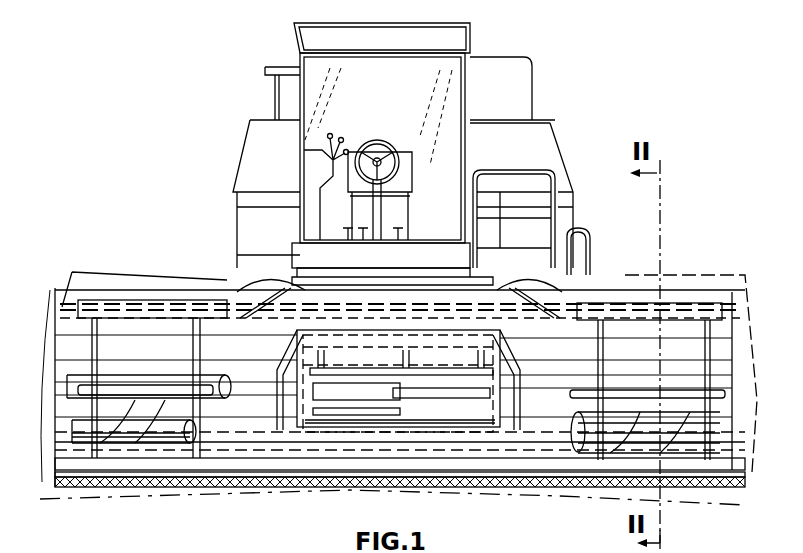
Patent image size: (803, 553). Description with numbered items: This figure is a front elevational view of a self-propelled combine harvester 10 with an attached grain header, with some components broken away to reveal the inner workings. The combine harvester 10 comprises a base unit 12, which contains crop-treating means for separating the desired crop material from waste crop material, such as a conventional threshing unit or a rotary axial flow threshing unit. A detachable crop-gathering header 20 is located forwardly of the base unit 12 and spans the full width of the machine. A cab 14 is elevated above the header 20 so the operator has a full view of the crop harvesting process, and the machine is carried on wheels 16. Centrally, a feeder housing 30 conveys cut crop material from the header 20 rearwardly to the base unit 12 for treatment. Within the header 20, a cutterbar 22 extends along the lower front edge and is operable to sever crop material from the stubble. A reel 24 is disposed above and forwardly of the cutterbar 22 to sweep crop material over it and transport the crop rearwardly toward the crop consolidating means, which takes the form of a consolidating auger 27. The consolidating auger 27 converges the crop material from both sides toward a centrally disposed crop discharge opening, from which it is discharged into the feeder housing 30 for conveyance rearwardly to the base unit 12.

The combine harvester 10 is at (190, 214).
The base unit 12 is at (564, 172).
The cab 14 is at (472, 33).
The wheels 16 is at (268, 280).
The crop-gathering header 20 is at (97, 258).
The cutterbar 22 is at (180, 486).
The reel 24 is at (93, 302).
The consolidating auger 27 is at (173, 363).
The feeder housing 30 is at (381, 257).